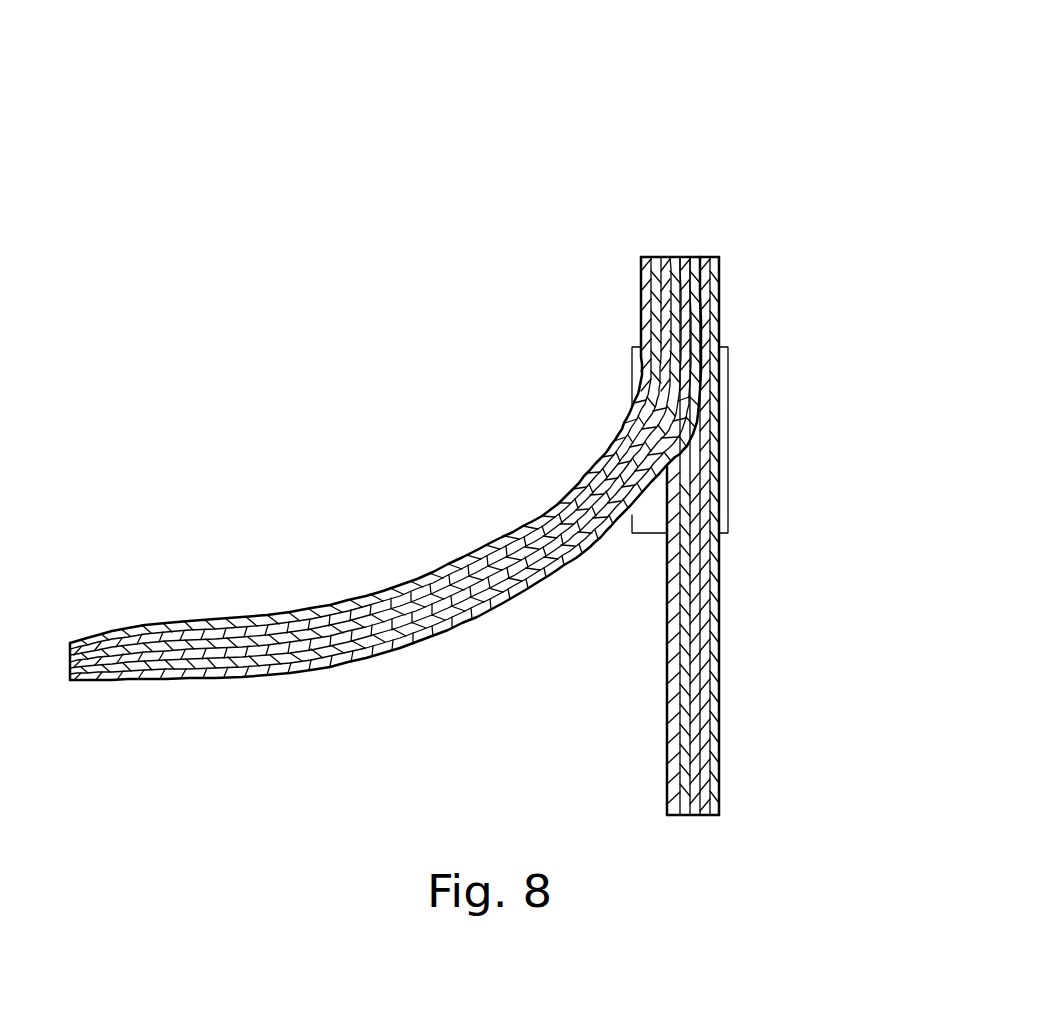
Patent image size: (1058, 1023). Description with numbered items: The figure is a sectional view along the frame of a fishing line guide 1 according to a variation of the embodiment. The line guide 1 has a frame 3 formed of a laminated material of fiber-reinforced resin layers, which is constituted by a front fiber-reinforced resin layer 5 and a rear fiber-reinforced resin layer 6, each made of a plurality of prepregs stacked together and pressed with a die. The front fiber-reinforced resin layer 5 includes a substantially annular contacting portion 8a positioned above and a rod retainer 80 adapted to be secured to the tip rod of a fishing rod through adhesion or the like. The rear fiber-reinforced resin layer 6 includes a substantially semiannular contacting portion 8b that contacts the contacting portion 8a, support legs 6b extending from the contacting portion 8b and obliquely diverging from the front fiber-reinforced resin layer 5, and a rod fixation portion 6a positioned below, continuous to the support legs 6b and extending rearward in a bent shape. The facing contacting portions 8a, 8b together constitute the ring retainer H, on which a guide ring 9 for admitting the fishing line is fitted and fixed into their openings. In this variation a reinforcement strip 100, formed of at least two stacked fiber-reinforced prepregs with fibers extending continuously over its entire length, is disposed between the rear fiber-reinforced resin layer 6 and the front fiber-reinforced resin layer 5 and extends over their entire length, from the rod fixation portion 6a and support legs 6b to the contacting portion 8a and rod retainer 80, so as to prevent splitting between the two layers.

The line guide 1 is at (753, 145).
The ring retainer H is at (723, 276).
The contacting portion 8a is at (723, 320).
The contacting portion 8b is at (641, 305).
The guide ring 9 is at (650, 515).
The frame 3 is at (313, 525).
The rear fiber-reinforced resin layer 6 is at (498, 537).
The rod fixation portion 6a is at (163, 624).
The support legs 6b is at (480, 615).
The reinforcement strip 100 is at (278, 676).
The front fiber-reinforced resin layer 5 is at (723, 582).
The rod retainer 80 is at (722, 742).